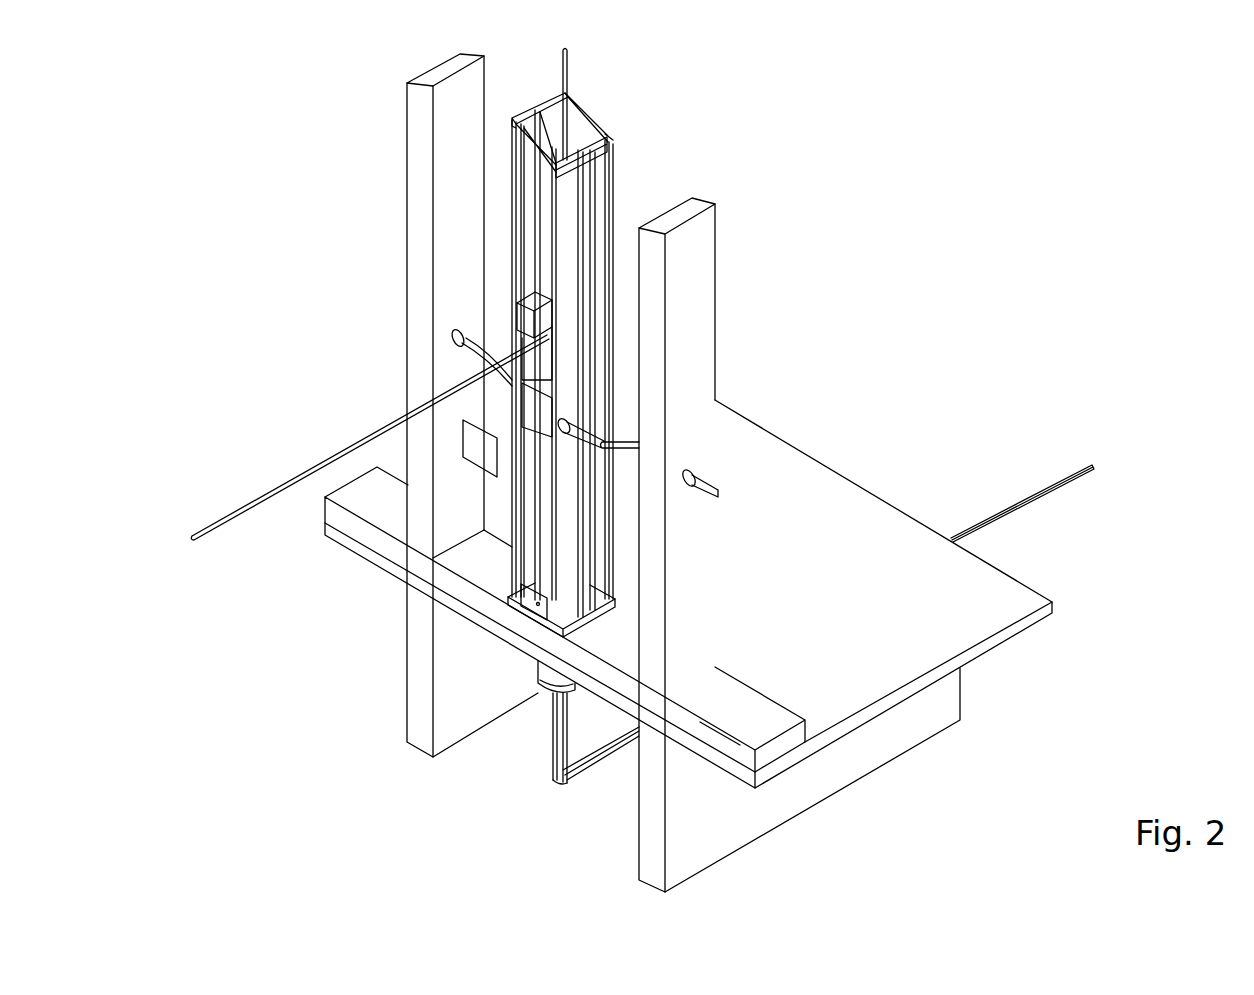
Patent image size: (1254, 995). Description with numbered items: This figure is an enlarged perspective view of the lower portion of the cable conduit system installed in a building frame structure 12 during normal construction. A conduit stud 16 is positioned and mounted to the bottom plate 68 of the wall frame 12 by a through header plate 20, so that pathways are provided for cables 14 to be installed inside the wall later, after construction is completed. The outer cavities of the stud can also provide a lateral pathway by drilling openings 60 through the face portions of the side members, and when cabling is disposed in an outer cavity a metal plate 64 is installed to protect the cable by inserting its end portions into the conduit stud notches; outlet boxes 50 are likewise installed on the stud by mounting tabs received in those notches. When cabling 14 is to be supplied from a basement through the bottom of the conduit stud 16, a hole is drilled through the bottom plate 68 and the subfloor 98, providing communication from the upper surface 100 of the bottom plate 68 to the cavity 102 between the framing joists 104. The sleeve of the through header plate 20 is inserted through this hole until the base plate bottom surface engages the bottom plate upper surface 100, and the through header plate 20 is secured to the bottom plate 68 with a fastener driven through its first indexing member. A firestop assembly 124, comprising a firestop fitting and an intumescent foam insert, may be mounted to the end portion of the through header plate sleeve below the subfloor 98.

The building frame structure 12 is at (705, 578).
The cables 14 is at (567, 64).
The conduit stud 16 is at (610, 150).
The through header plate 20 is at (508, 592).
The outlet boxes 50 is at (517, 310).
The openings 60 is at (605, 420).
The metal plate 64 is at (472, 460).
The bottom plate 68 is at (753, 707).
The subfloor 98 is at (916, 606).
The upper surface 100 is at (718, 708).
The cavity 102 is at (503, 750).
The framing joists 104 is at (412, 662).
The firestop assembly 124 is at (538, 672).